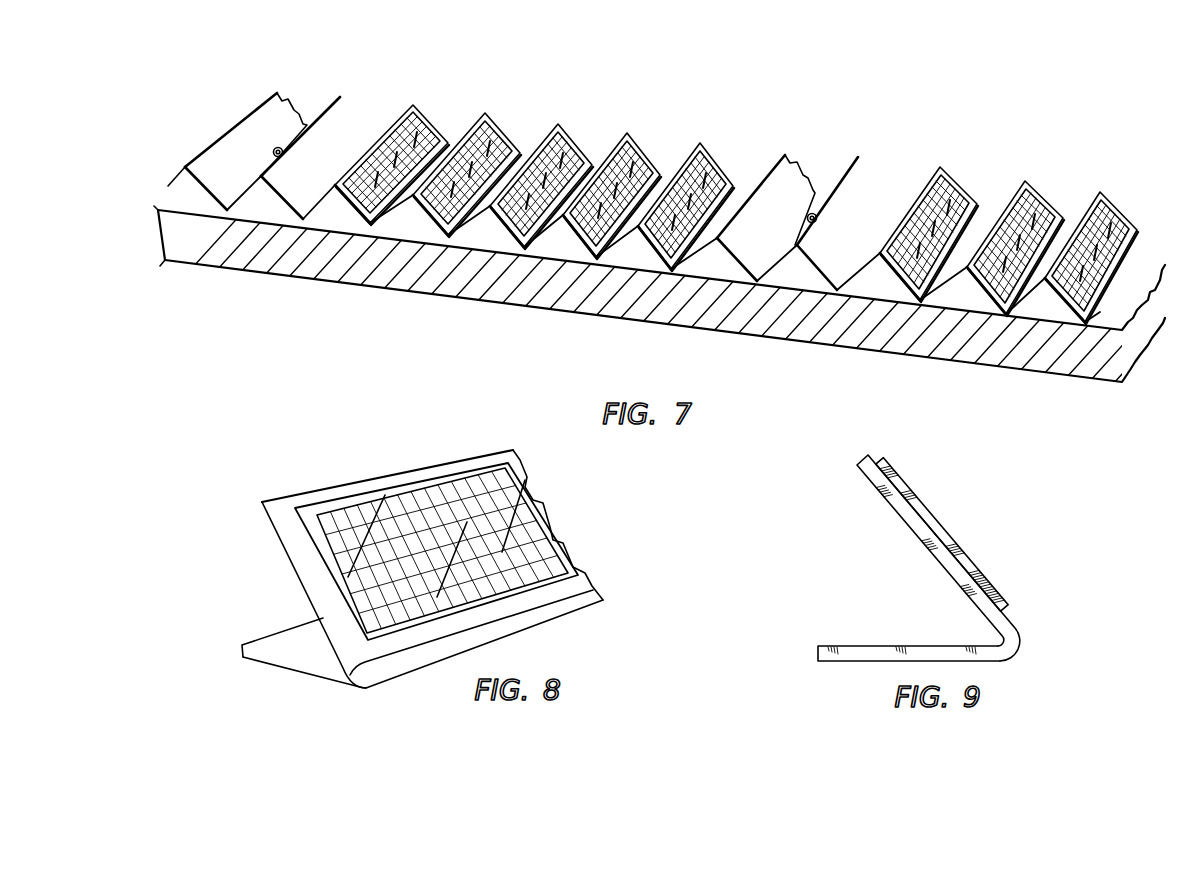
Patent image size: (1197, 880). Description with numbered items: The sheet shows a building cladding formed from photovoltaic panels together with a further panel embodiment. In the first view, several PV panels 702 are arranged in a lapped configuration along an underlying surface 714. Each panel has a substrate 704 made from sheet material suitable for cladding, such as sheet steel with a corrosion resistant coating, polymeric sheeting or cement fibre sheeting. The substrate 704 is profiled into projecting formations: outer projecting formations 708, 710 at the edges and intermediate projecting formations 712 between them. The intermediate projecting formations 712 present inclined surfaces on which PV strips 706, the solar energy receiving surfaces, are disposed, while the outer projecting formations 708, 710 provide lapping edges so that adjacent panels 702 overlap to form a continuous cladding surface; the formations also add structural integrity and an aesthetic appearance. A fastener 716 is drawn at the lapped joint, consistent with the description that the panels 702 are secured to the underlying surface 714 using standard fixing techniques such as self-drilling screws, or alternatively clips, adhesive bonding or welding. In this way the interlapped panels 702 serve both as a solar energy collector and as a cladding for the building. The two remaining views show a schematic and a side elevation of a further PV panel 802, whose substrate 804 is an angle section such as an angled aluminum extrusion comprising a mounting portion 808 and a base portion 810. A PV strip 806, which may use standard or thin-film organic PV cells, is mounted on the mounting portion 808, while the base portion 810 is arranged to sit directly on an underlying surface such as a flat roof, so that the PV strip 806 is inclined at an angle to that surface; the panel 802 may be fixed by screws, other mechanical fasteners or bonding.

In FIG. 7, the PV panel 702 is at (658, 218).
In FIG. 7, the substrate 704 is at (642, 280).
In FIG. 7, the PV strip 706 is at (510, 126).
In FIG. 7, the outer projecting formation 708 is at (247, 195).
In FIG. 7, the outer projecting formation 710 is at (272, 158).
In FIG. 7, the intermediate projecting formation 712 is at (417, 200).
In FIG. 7, the underlying surface 714 is at (420, 282).
In FIG. 7, the fastener 716 is at (276, 148).
In FIG. 8, the PV panel 802 is at (461, 551).
In FIG. 9, the PV panel 802 is at (978, 558).
In FIG. 8, the substrate 804 is at (398, 551).
In FIG. 9, the substrate 804 is at (957, 558).
In FIG. 8, the PV strip 806 is at (540, 553).
In FIG. 9, the PV strip 806 is at (940, 520).
In FIG. 8, the mounting portion 808 is at (298, 537).
In FIG. 9, the mounting portion 808 is at (920, 527).
In FIG. 8, the base portion 810 is at (277, 640).
In FIG. 9, the base portion 810 is at (890, 654).